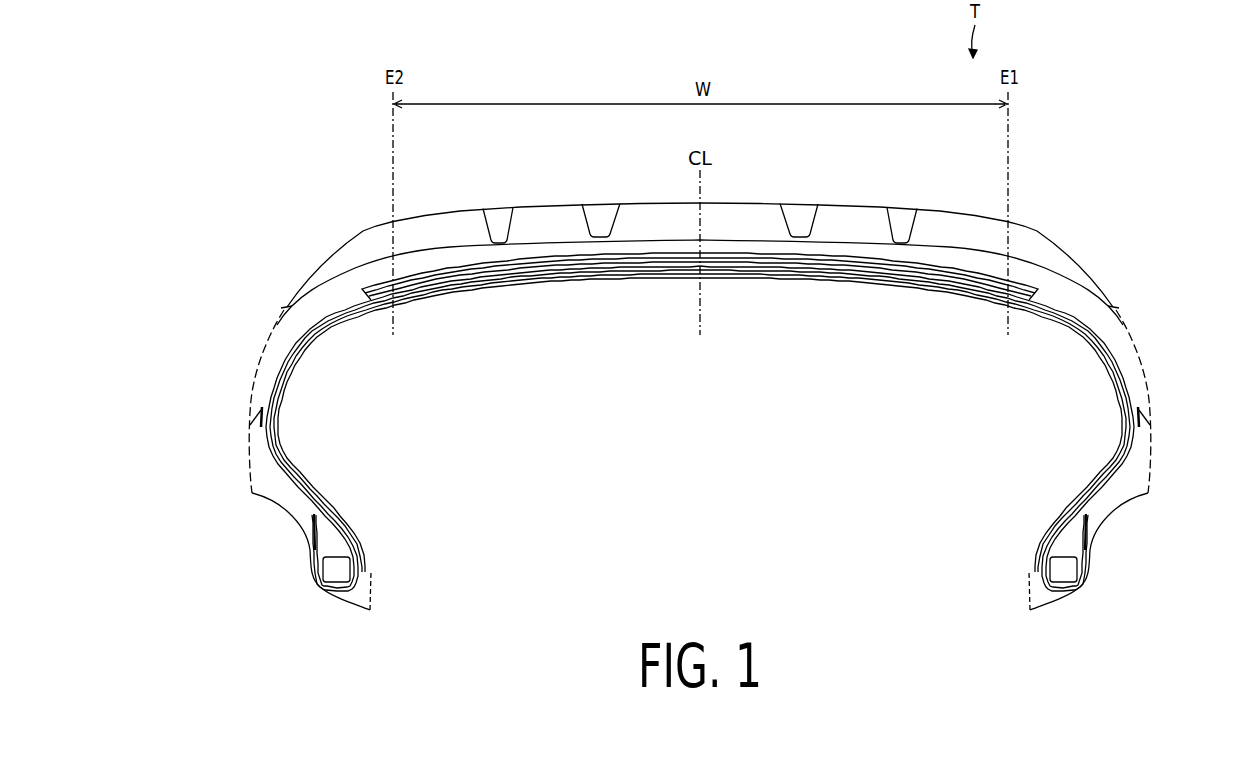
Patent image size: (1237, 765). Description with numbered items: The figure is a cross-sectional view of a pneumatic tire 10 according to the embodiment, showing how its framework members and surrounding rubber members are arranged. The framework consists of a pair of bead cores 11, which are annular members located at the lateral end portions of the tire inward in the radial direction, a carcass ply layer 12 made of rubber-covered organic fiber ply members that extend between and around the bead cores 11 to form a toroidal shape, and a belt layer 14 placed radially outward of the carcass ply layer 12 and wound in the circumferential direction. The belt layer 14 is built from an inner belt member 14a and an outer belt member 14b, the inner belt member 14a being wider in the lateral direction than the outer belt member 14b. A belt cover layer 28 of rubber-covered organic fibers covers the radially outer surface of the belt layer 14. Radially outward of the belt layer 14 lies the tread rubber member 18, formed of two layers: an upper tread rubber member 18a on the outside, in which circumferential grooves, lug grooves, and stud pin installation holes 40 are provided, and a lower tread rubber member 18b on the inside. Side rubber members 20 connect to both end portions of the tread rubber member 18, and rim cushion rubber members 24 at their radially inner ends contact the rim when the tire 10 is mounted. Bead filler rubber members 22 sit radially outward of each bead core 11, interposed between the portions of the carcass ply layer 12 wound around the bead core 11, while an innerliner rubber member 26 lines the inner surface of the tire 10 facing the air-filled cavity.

The pneumatic tire 10 is at (1093, 181).
The bead core 11 is at (343, 565).
The carcass ply layer 12 is at (1087, 330).
The belt layer 14 is at (700, 217).
The inner belt member 14a is at (920, 273).
The outer belt member 14b is at (950, 263).
The tread rubber member 18 is at (729, 264).
The upper tread rubber member 18a is at (1036, 243).
The lower tread rubber member 18b is at (1040, 279).
The side rubber member 20 is at (258, 357).
The bead filler rubber member 22 is at (328, 533).
The rim cushion rubber member 24 is at (262, 478).
The innerliner rubber member 26 is at (650, 276).
The belt cover layer 28 is at (381, 274).
The stud pin installation hole 40 is at (541, 203).